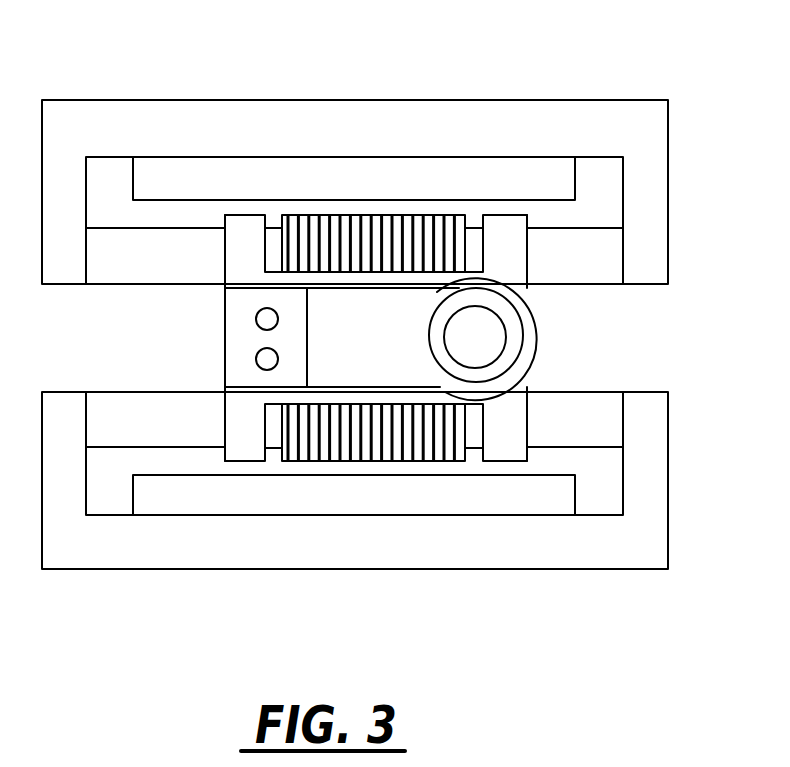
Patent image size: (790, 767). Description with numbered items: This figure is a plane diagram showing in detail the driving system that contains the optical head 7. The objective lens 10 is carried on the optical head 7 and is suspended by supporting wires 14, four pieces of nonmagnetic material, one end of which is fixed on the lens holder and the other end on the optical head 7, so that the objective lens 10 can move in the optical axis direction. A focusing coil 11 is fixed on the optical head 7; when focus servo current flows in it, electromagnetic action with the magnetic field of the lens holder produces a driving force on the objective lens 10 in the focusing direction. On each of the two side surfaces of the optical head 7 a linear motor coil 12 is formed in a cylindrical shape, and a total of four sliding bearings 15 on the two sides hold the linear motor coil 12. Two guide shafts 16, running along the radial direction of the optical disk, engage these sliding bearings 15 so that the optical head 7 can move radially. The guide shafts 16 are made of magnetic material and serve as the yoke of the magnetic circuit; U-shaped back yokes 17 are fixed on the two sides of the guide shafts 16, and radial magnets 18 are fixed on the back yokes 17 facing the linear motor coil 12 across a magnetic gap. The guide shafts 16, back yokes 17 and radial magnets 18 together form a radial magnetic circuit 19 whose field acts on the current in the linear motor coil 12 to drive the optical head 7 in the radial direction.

The optical head 7 is at (377, 331).
The objective lens 10 is at (457, 337).
The focusing coil 11 is at (532, 348).
The linear motor coil 12 is at (305, 220).
The supporting wires 14 is at (317, 326).
The sliding bearings 15 is at (237, 250).
The guide shafts 16 is at (112, 272).
The back yokes 17 is at (392, 120).
The radial magnets 18 is at (473, 170).
The stator 19 is at (355, 338).